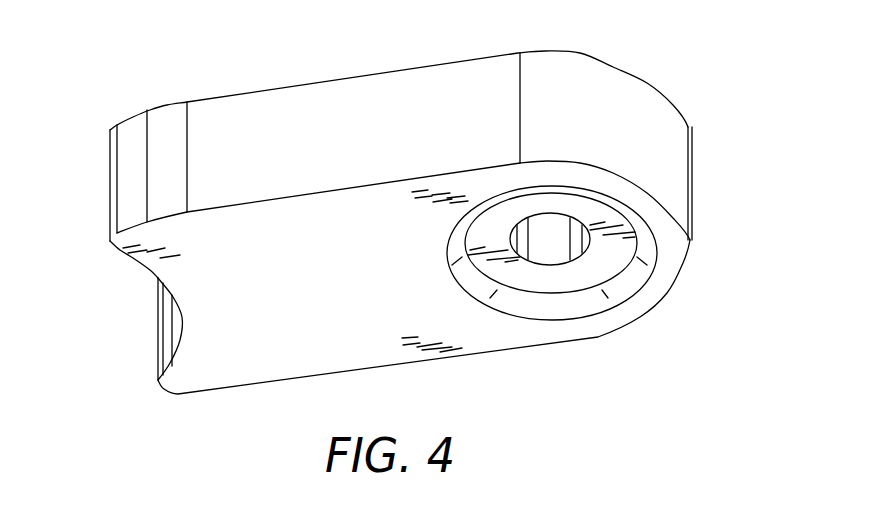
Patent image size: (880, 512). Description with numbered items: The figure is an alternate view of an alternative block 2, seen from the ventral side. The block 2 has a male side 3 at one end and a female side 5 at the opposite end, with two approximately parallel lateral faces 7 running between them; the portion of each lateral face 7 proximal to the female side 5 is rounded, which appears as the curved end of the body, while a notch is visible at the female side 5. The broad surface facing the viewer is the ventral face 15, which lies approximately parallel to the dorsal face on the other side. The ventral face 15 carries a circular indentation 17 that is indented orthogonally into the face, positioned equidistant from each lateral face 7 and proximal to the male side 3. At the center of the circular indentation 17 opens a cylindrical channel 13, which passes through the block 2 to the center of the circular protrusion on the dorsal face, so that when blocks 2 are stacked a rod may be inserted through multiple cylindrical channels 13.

The alternative block 2 is at (397, 213).
The male side 3 is at (687, 170).
The female side 5 is at (175, 325).
The lateral face 7 is at (300, 117).
The cylindrical channel 13 is at (547, 250).
The ventral face 15 is at (343, 322).
The circular indentation 17 is at (610, 252).